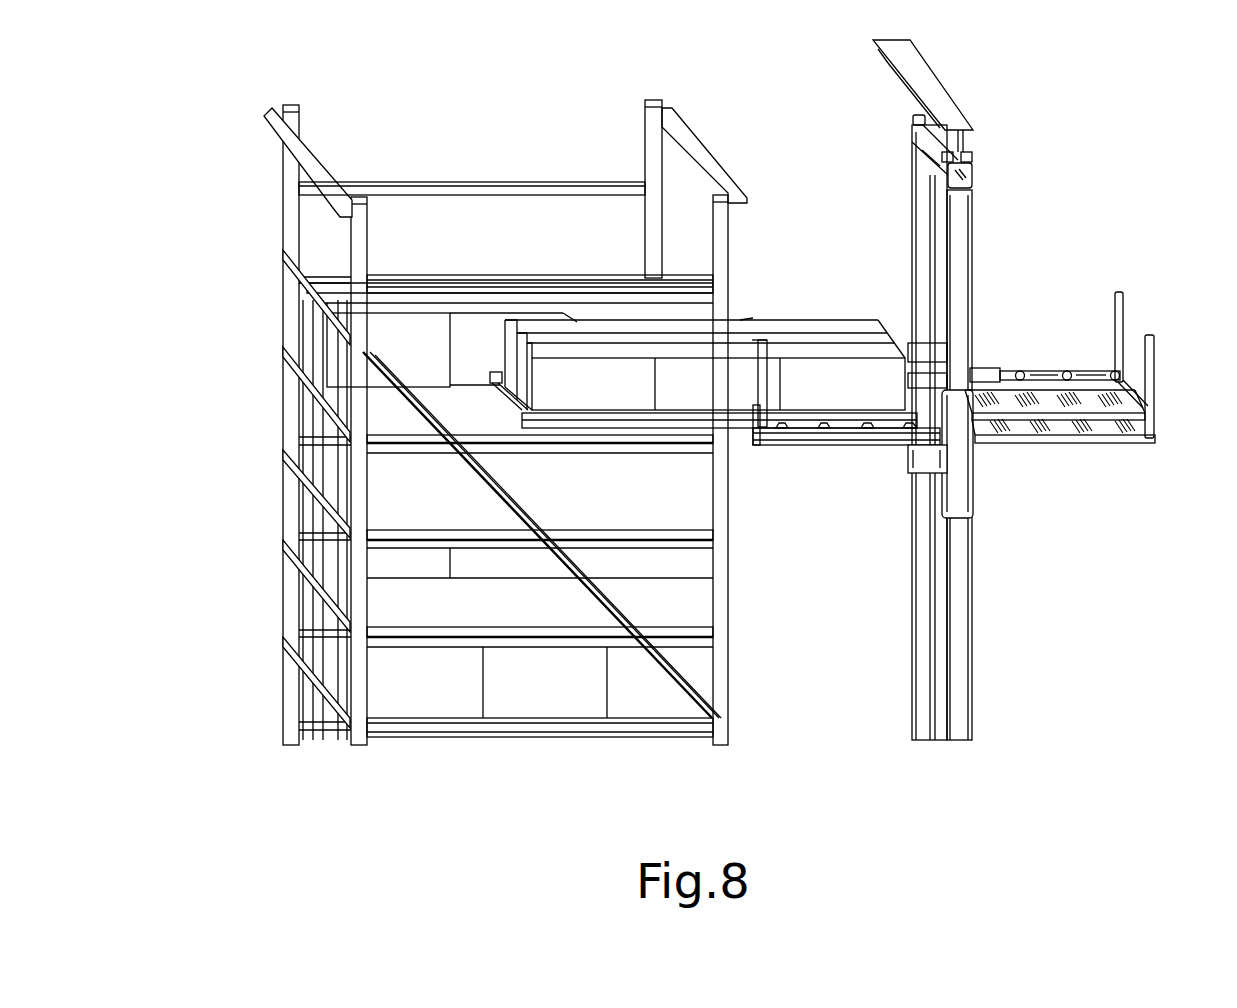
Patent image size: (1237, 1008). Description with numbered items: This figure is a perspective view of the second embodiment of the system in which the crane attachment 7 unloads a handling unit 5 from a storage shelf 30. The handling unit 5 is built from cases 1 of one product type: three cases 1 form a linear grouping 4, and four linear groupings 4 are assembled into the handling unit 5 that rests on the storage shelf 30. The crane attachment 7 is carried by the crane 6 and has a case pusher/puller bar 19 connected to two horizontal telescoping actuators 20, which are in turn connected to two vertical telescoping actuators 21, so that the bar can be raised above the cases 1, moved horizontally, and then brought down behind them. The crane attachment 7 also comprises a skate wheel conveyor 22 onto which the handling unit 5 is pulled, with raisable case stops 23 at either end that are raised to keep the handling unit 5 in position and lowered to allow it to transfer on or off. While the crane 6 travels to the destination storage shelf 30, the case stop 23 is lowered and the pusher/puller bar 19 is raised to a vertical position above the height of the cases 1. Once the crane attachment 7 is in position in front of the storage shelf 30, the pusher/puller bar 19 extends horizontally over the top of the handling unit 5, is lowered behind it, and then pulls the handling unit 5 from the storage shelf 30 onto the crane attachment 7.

The case 1 is at (423, 693).
The linear grouping 4 is at (857, 364).
The handling unit 5 is at (789, 300).
The crane 6 is at (983, 232).
The crane attachment 7 is at (1110, 457).
The case pusher/puller bar 19 is at (490, 385).
The horizontal telescoping actuator 20 is at (812, 422).
The vertical telescoping actuator 21 is at (1115, 298).
The skate wheel conveyor 22 is at (1037, 398).
The raisable case stop 23 is at (1140, 405).
The storage shelf 30 is at (310, 445).